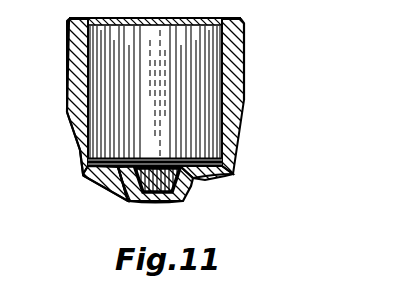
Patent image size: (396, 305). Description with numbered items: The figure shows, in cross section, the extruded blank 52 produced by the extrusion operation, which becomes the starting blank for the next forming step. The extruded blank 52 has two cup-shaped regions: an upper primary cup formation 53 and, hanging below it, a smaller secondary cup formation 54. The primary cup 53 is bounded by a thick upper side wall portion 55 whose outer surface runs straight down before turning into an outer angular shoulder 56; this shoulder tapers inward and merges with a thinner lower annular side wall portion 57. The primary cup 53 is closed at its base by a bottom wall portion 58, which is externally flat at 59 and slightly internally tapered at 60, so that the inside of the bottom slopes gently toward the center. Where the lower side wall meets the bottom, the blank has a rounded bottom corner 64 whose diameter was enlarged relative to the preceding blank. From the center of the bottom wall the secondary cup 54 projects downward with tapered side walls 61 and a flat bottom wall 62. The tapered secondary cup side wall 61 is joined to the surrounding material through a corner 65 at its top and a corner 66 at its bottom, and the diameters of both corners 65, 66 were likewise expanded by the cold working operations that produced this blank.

The extruded blank 52 is at (236, 52).
The primary cup formation 53 is at (247, 96).
The secondary cup formation 54 is at (122, 194).
The thick upper side wall portion 55 is at (70, 60).
The outer angular shoulder 56 is at (70, 118).
The thinner lower annular side wall portion 57 is at (97, 176).
The bottom wall portion 58 is at (117, 184).
The externally flat surface 59 is at (205, 186).
The internally tapered surface 60 is at (222, 148).
The tapered side walls 61 is at (190, 190).
The flat bottom wall 62 is at (160, 203).
The rounded bottom corner 64 is at (215, 170).
The top corner of tapered secondary cup side wall 65 is at (120, 188).
The bottom corner of tapered secondary cup side wall 66 is at (127, 200).